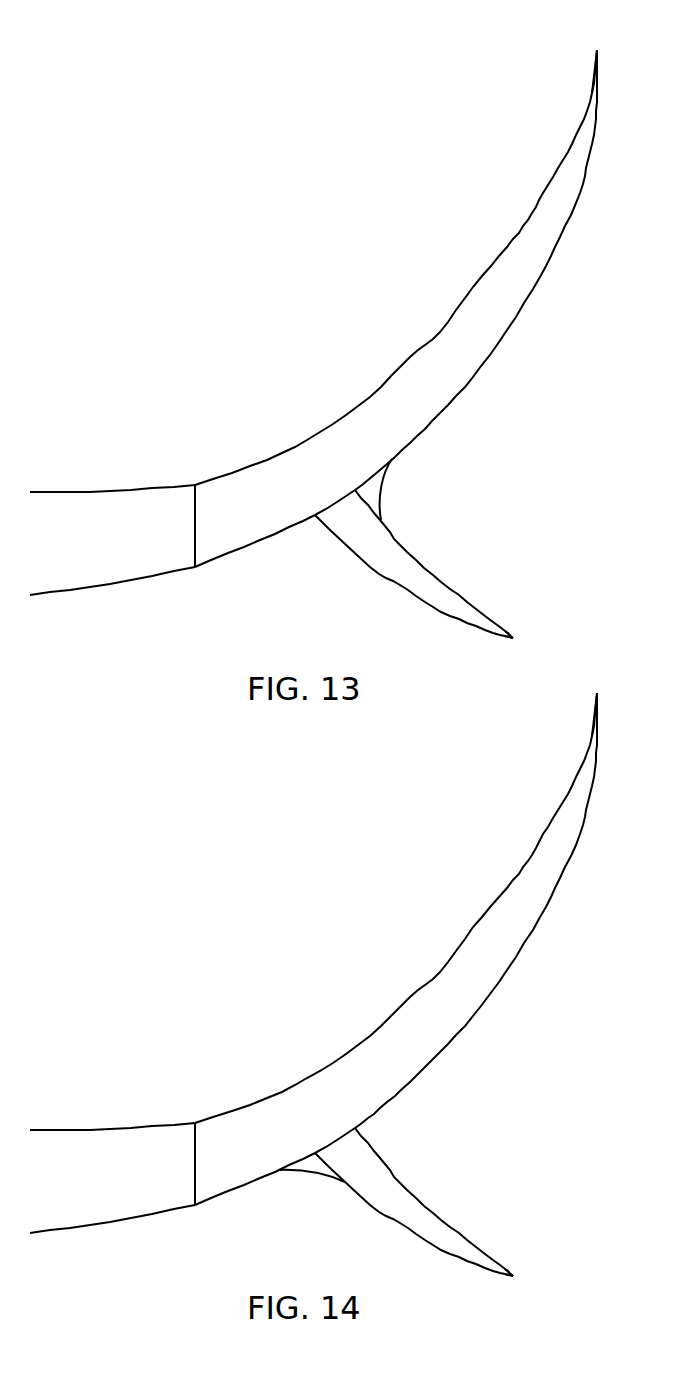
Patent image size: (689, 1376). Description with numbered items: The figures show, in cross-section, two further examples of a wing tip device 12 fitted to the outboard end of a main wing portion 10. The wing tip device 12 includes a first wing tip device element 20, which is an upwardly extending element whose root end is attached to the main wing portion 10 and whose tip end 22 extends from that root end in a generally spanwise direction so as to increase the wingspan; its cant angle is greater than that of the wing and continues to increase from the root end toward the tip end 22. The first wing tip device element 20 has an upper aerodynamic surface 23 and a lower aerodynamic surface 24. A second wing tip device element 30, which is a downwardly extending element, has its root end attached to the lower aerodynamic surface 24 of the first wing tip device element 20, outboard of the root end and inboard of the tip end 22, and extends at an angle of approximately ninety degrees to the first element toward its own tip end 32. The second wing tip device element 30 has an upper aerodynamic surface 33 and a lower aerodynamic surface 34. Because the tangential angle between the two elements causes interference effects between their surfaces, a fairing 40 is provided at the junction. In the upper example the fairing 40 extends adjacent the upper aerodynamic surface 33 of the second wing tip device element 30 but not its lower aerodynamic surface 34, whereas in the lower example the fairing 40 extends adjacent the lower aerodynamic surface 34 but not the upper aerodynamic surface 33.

In FIG. 13, the main wing portion 10 is at (83, 557).
In FIG. 14, the main wing portion 10 is at (83, 1195).
In FIG. 13, the wing tip device 12 is at (258, 257).
In FIG. 14, the wing tip device 12 is at (581, 988).
In FIG. 13, the first wing tip device element 20 is at (425, 292).
In FIG. 14, the first wing tip device element 20 is at (425, 921).
In FIG. 13, the tip end 22 is at (599, 48).
In FIG. 14, the tip end 22 is at (598, 691).
In FIG. 13, the upper aerodynamic surface 23 is at (432, 338).
In FIG. 14, the upper aerodynamic surface 23 is at (433, 978).
In FIG. 13, the lower aerodynamic surface 24 is at (500, 344).
In FIG. 14, the lower aerodynamic surface 24 is at (477, 1015).
In FIG. 13, the second wing tip device element 30 is at (448, 574).
In FIG. 14, the second wing tip device element 30 is at (448, 1212).
In FIG. 13, the tip end 32 is at (515, 640).
In FIG. 14, the tip end 32 is at (515, 1278).
In FIG. 13, the upper aerodynamic surface 33 is at (432, 572).
In FIG. 14, the upper aerodynamic surface 33 is at (432, 1210).
In FIG. 13, the lower aerodynamic surface 34 is at (371, 577).
In FIG. 14, the lower aerodynamic surface 34 is at (393, 1223).
In FIG. 13, the fairing 40 is at (378, 490).
In FIG. 14, the fairing 40 is at (312, 1167).